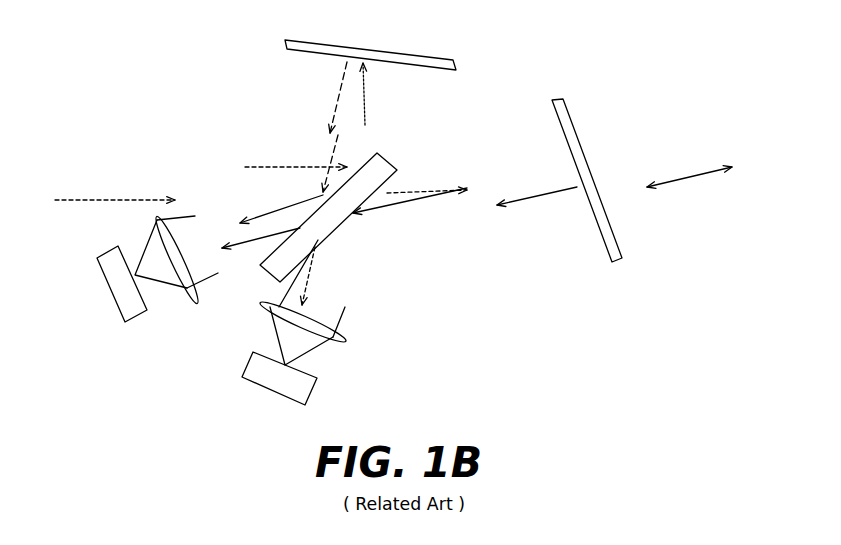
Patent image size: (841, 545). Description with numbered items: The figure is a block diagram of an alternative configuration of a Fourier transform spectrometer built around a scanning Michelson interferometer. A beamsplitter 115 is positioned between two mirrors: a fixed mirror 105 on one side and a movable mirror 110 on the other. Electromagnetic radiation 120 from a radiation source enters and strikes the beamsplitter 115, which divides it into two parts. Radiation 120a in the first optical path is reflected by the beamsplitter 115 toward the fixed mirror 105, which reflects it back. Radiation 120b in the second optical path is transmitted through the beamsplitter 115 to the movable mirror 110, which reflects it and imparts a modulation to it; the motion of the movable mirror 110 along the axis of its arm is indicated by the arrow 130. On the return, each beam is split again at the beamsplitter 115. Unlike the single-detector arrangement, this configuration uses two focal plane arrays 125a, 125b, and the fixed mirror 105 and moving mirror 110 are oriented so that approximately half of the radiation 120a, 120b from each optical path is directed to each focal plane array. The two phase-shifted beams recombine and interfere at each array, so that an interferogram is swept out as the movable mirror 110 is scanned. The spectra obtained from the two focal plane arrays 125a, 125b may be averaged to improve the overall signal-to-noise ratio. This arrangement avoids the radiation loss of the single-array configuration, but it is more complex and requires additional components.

The fixed mirror 105 is at (455, 60).
The movable mirror 110 is at (560, 100).
The beamsplitter 115 is at (390, 165).
The electromagnetic radiation 120 is at (92, 202).
The radiation in a first optical path 120a is at (323, 98).
The radiation in a second optical path 120b is at (430, 207).
The focal plane array 125a is at (125, 322).
The focal plane array 125b is at (317, 378).
The arrow indicating motion of the movable mirror 130 is at (703, 177).